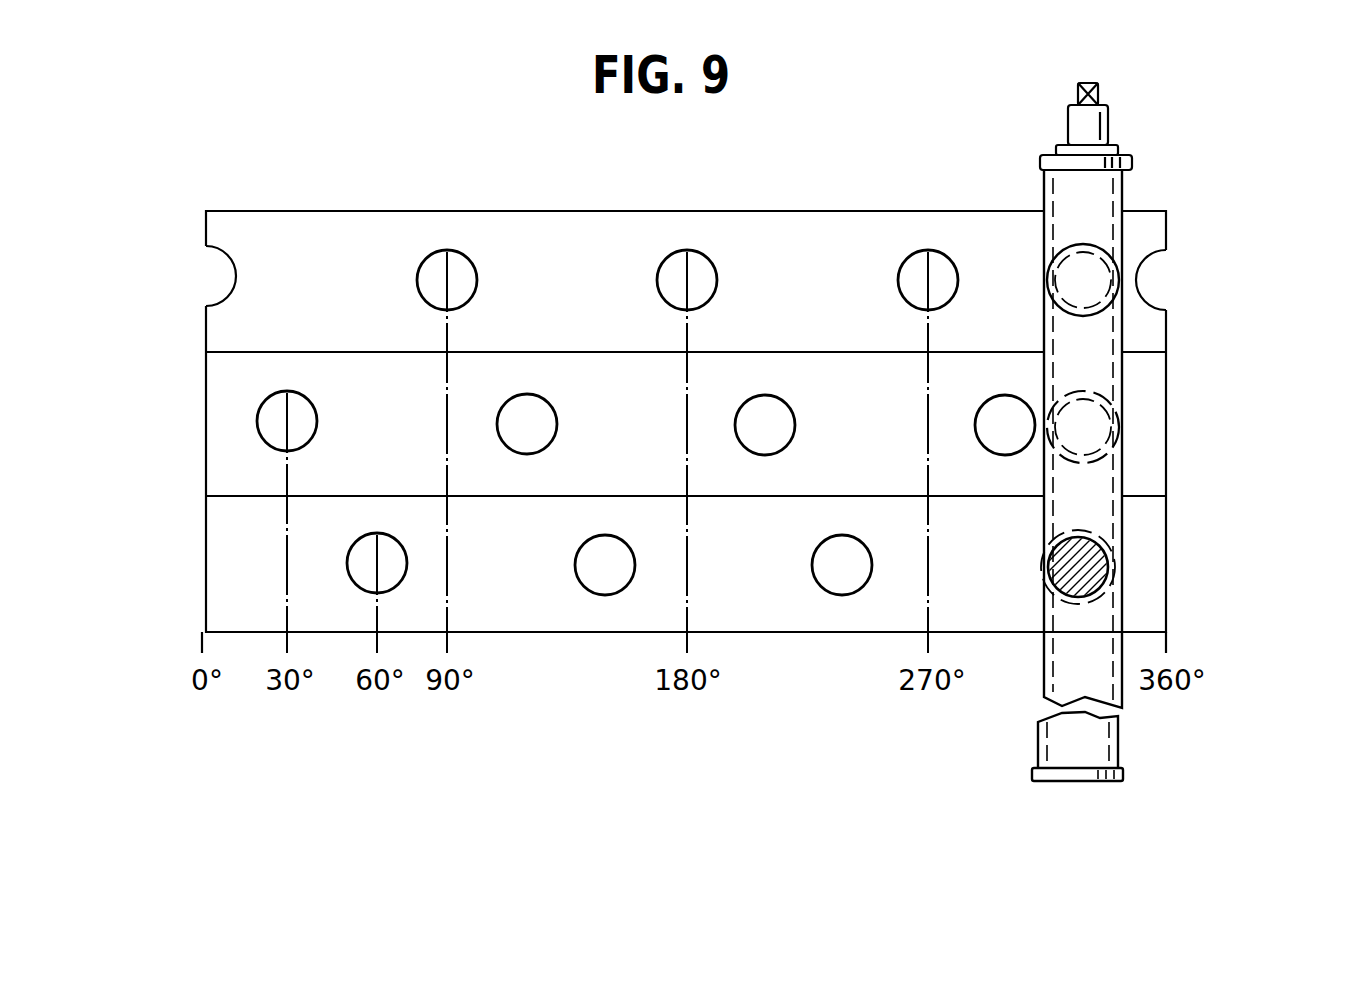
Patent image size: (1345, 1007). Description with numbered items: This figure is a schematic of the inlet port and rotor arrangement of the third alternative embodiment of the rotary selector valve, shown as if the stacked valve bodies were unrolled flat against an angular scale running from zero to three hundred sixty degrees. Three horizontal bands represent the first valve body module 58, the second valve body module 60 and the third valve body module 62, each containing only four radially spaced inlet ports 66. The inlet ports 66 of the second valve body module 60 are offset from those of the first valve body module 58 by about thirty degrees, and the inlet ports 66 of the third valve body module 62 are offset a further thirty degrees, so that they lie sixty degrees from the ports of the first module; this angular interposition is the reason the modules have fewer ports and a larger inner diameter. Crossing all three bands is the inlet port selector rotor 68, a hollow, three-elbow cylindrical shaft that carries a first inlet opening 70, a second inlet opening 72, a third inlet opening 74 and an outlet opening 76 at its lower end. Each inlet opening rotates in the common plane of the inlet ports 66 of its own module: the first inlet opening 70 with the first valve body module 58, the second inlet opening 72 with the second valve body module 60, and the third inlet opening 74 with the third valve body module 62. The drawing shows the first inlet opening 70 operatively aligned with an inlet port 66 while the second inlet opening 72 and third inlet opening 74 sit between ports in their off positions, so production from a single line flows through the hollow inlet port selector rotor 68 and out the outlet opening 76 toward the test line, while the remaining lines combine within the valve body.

The first valve body module 58 is at (1166, 620).
The second valve body module 60 is at (1170, 487).
The third valve body module 62 is at (1170, 330).
The inlet ports 66 is at (455, 284).
The inlet port selector rotor 68 is at (1063, 680).
The first inlet opening 70 is at (1090, 565).
The second inlet opening 72 is at (1093, 430).
The third inlet opening 74 is at (1089, 289).
The outlet opening 76 is at (1074, 790).